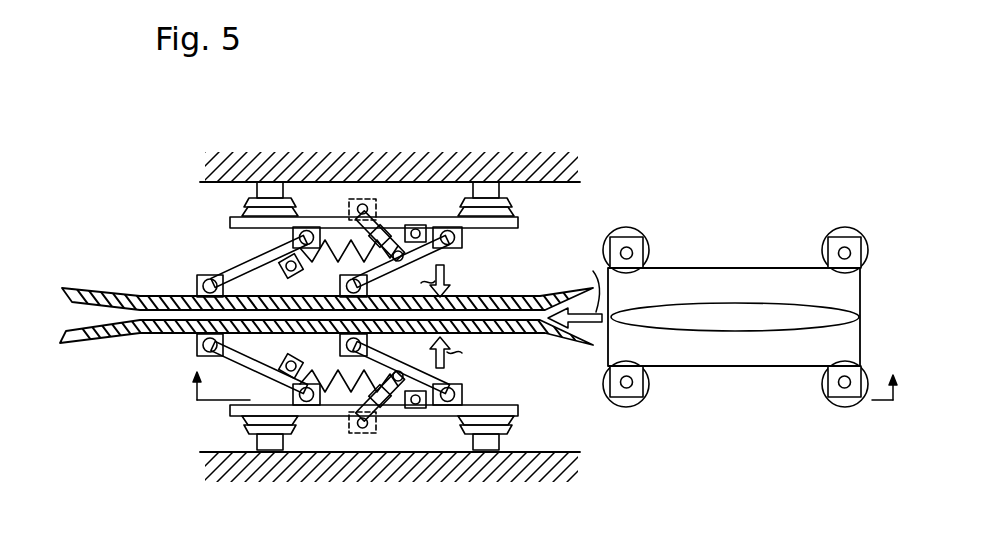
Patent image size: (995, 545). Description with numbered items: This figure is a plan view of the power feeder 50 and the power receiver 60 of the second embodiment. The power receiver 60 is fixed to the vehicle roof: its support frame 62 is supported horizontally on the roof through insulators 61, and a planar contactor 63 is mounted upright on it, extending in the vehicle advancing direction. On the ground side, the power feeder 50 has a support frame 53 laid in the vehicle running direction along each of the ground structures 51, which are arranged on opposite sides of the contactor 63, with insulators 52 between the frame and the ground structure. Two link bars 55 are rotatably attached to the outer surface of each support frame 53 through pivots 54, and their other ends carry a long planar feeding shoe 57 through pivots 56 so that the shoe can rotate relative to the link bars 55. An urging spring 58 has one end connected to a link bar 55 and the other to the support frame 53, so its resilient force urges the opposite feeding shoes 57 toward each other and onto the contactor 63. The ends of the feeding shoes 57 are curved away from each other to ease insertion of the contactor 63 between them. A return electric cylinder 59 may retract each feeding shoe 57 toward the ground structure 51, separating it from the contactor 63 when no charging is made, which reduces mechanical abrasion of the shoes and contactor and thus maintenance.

The power feeder 50 is at (152, 228).
The ground structure 51 is at (548, 182).
The insulator 52 is at (508, 206).
The support frame 53 is at (394, 217).
The pivot 54 is at (293, 235).
The link bar 55 is at (232, 272).
The pivot 56 is at (197, 284).
The feeding shoe 57 is at (76, 306).
The urging spring 58 is at (348, 221).
The return electric cylinder 59 is at (356, 248).
The power receiver 60 is at (730, 236).
The insulator 61 is at (627, 405).
The support frame 62 is at (722, 360).
The contactor 63 is at (764, 321).